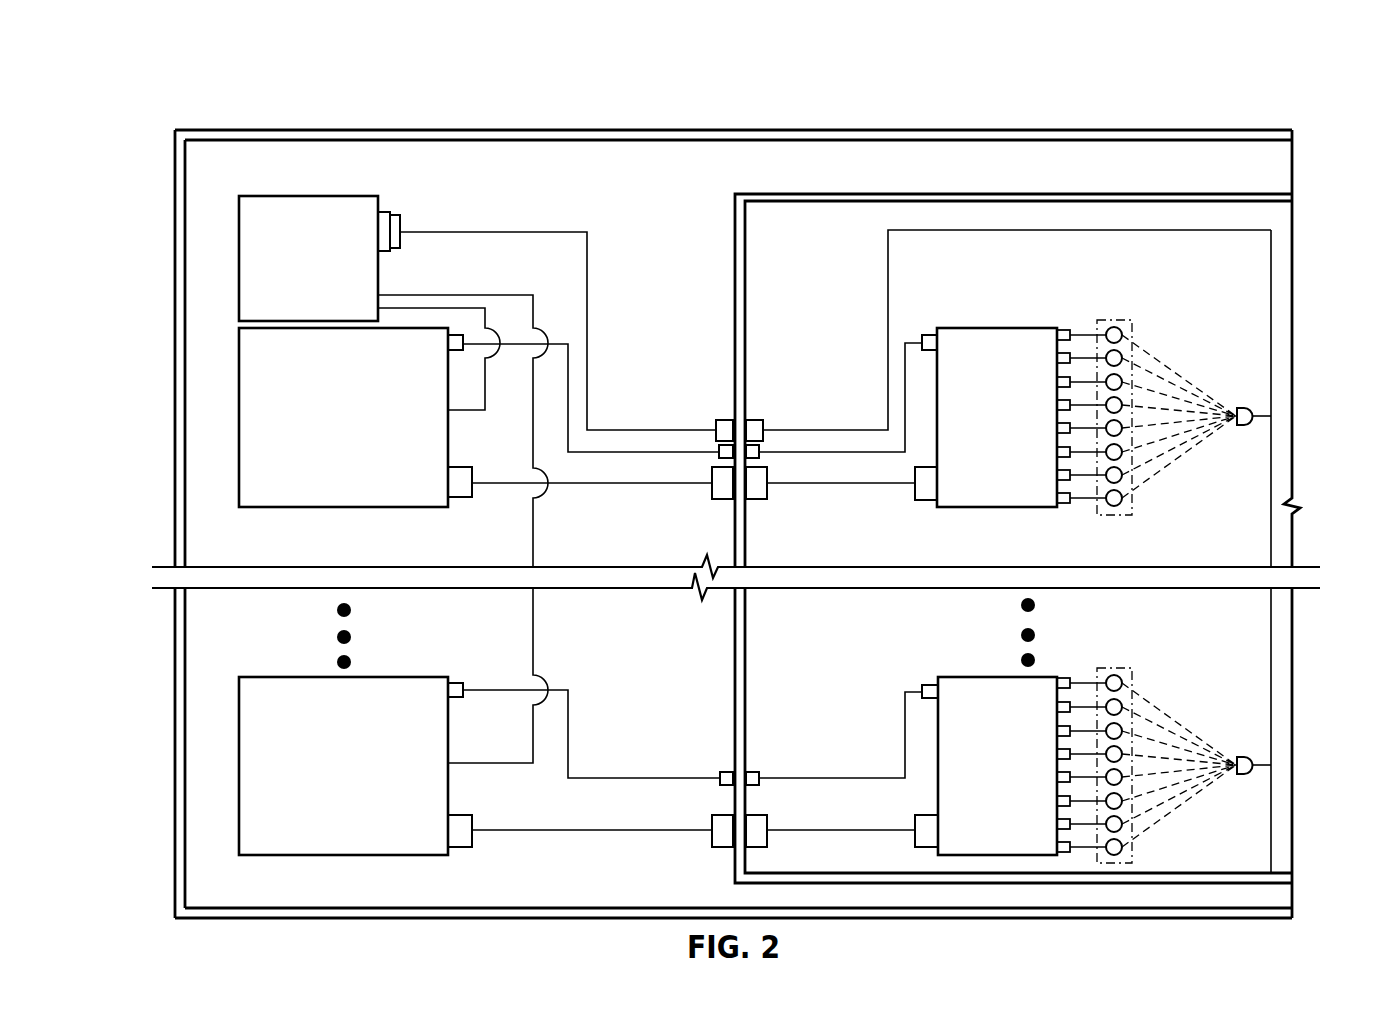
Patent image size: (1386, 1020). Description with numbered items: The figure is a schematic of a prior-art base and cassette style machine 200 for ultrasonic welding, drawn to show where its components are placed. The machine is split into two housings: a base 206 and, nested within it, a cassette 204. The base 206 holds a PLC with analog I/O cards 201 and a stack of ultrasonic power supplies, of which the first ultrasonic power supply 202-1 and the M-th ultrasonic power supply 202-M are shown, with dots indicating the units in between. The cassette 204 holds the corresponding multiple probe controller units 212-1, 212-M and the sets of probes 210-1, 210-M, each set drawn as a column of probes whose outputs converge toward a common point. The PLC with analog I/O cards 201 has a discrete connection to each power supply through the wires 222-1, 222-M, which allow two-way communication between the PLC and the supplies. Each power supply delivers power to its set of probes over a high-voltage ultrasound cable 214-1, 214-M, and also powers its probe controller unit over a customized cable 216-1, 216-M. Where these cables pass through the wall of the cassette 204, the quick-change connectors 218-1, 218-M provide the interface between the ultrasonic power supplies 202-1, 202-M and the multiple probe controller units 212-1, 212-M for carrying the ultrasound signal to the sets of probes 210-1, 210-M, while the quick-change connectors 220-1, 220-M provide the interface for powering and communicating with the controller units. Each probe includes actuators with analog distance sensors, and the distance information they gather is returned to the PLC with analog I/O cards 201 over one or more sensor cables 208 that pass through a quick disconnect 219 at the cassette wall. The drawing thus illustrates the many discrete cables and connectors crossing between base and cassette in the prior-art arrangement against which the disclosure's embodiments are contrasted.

The base and cassette style machine 200 is at (143, 90).
The PLC with analog I/O cards 201 is at (238, 212).
The ultrasonic power supply 202-1 is at (238, 346).
The ultrasonic power supply 202-M is at (238, 690).
The cassette 204 is at (1268, 192).
The base 206 is at (1268, 128).
The sensor cables 208 is at (1273, 443).
The set of probes 210-1 is at (1098, 320).
The set of probes 210-M is at (1098, 668).
The multiple probe controller unit 212-1 is at (960, 327).
The multiple probe controller unit 212-M is at (960, 676).
The high-voltage ultrasound cable 214-1 is at (564, 340).
The high-voltage ultrasound cable 214-M is at (562, 688).
The customized cable 216-1 is at (497, 484).
The customized cable 216-M is at (503, 833).
The quick-change connector 218-1 is at (719, 447).
The quick-change connector 218-M is at (721, 772).
The quick disconnect 219 is at (763, 421).
The quick-change connector 220-1 is at (710, 490).
The quick-change connector 220-M is at (710, 840).
The wire 222-1 is at (487, 397).
The wire 222-M is at (470, 767).